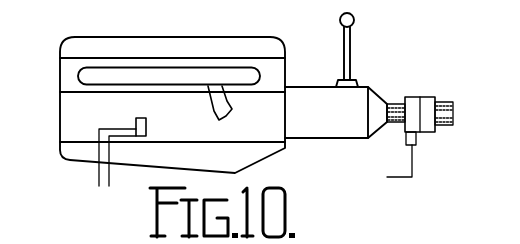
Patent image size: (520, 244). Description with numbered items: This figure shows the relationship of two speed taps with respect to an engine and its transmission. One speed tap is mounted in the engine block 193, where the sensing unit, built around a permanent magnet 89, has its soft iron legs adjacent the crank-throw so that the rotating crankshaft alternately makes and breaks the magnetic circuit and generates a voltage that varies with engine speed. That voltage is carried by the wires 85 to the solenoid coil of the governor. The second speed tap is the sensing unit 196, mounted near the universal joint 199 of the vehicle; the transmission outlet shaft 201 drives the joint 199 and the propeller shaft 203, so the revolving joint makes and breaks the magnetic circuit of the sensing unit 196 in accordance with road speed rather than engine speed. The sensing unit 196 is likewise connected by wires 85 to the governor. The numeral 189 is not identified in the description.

The hand-held unit 189 is at (51, 143).
The engine block 193 is at (79, 112).
The permanent magnet 89 is at (146, 125).
The wires 85 is at (109, 186).
The transmission outlet shaft 201 is at (395, 107).
The universal joint 199 is at (425, 93).
The propeller shaft 203 is at (453, 111).
The sensing unit 196 is at (404, 140).